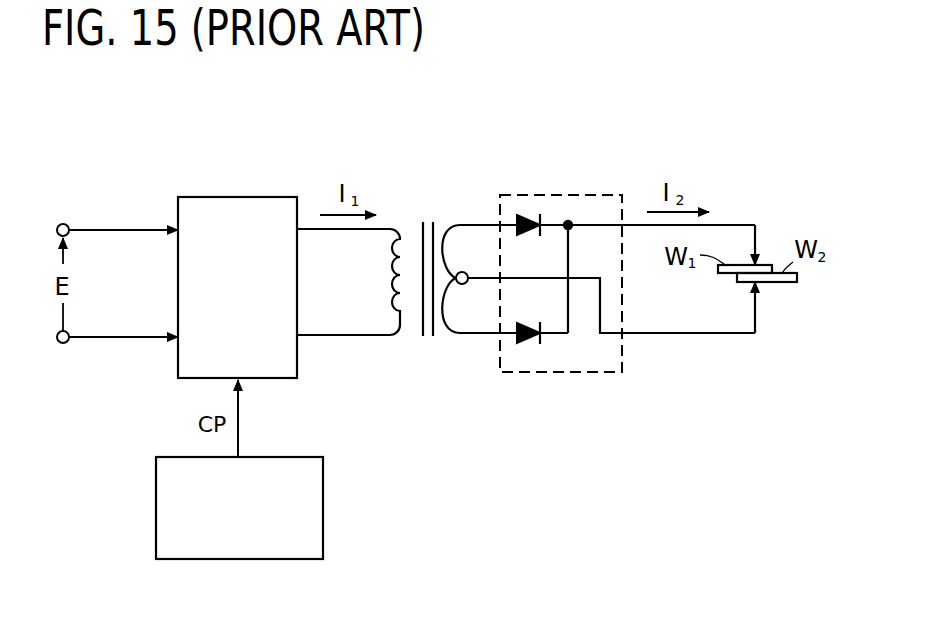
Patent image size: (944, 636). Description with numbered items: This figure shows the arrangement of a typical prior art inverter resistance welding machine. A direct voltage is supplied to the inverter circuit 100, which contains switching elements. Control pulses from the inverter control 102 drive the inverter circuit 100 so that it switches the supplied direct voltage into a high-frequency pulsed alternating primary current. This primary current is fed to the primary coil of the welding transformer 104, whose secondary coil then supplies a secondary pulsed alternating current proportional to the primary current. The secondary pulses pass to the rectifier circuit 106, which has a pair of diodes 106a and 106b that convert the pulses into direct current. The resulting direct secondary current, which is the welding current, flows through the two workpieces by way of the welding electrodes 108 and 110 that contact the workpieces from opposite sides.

The inverter circuit 100 is at (228, 197).
The inverter control 102 is at (323, 497).
The welding transformer 104 is at (428, 220).
The rectifier circuit 106 is at (599, 255).
The diode 106a is at (524, 216).
The diode 106b is at (528, 345).
The welding electrode 108 is at (758, 238).
The welding electrode 110 is at (758, 303).